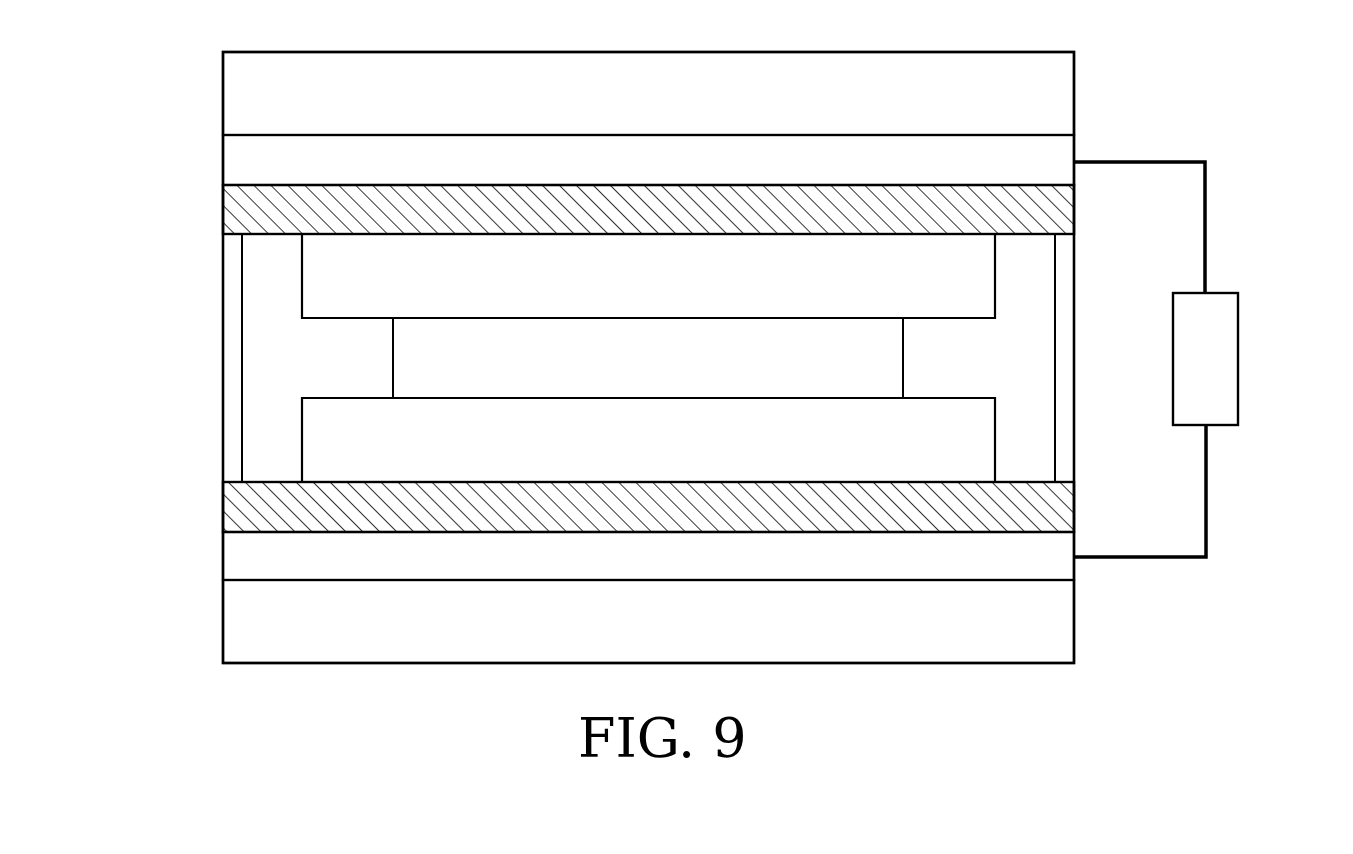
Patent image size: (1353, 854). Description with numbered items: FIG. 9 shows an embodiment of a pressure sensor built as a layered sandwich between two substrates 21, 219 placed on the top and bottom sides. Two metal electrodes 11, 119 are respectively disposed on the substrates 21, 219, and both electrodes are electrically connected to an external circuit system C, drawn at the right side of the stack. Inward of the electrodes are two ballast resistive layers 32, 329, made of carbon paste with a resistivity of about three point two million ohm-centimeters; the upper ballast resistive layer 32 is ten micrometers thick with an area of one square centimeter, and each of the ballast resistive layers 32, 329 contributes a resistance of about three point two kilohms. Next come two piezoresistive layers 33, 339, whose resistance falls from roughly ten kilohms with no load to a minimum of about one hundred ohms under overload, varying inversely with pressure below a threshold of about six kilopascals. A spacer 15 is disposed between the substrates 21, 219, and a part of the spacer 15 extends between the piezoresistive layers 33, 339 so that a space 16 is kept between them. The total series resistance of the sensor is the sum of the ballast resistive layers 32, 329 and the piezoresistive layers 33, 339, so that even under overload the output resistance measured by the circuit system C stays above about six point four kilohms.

The substrate 21 is at (242, 96).
The metal electrode 11 is at (242, 158).
The ballast resistive layer 32 is at (242, 207).
The spacer 15 is at (273, 262).
The piezoresistive layer 33 is at (340, 302).
The space 16 is at (442, 370).
The piezoresistive layer 339 is at (340, 445).
The ballast resistive layer 329 is at (242, 500).
The metal electrode 119 is at (242, 560).
The substrate 219 is at (242, 622).
The circuit system C is at (1215, 358).